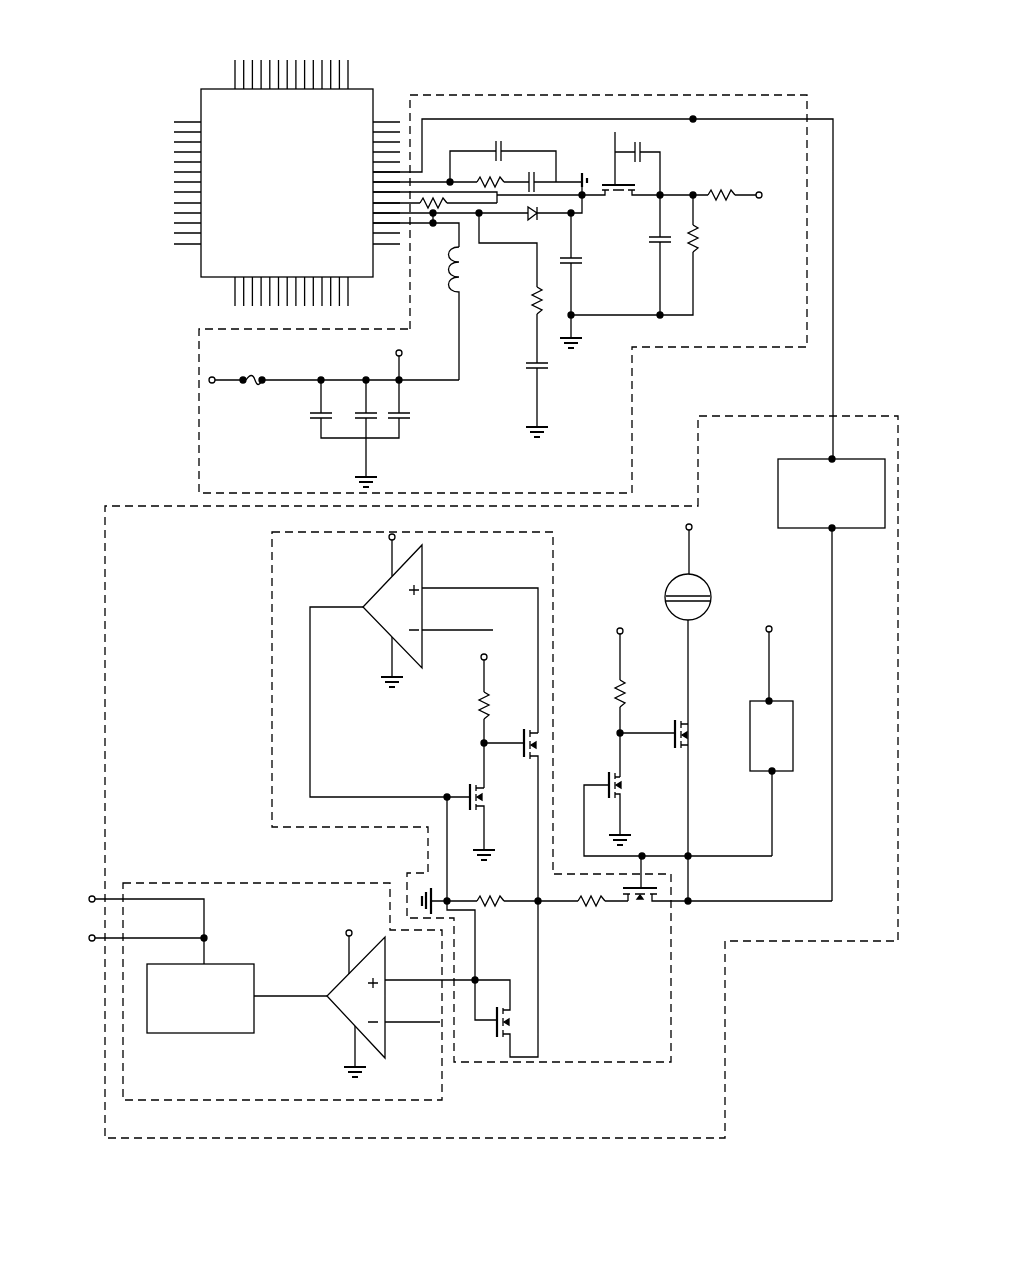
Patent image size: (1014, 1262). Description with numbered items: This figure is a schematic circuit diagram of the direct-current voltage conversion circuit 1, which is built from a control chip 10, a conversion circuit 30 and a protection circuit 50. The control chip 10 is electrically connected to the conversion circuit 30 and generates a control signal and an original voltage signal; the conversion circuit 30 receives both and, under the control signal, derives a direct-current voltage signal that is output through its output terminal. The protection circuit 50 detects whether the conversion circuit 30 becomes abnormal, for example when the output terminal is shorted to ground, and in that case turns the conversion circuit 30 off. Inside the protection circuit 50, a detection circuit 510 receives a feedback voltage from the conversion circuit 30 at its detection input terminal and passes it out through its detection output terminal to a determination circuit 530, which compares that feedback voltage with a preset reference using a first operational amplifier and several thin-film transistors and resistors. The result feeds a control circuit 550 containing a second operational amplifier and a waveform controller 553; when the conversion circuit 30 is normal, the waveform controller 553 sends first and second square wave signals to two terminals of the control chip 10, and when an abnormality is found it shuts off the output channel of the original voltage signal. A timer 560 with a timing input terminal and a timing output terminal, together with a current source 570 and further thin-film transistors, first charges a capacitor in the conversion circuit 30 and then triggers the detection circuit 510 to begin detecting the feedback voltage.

The direct-current voltage conversion circuit 1 is at (499, 30).
The control chip 10 is at (363, 89).
The conversion circuit 30 is at (590, 95).
The protection circuit 50 is at (725, 1055).
The detection circuit 510 is at (815, 457).
The determination circuit 530 is at (272, 606).
The control circuit 550 is at (252, 1100).
The waveform controller 553 is at (228, 964).
The timer 560 is at (777, 700).
The current source 570 is at (706, 578).